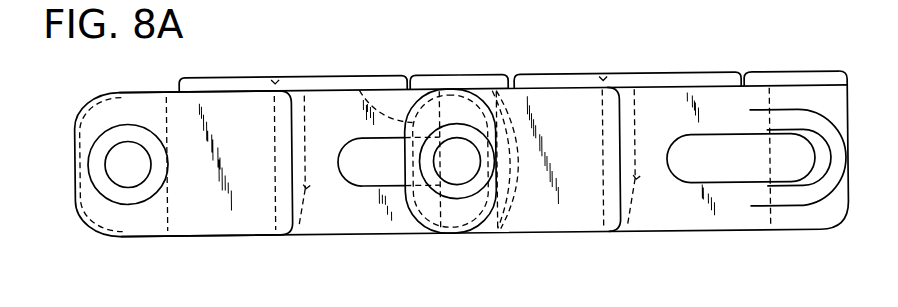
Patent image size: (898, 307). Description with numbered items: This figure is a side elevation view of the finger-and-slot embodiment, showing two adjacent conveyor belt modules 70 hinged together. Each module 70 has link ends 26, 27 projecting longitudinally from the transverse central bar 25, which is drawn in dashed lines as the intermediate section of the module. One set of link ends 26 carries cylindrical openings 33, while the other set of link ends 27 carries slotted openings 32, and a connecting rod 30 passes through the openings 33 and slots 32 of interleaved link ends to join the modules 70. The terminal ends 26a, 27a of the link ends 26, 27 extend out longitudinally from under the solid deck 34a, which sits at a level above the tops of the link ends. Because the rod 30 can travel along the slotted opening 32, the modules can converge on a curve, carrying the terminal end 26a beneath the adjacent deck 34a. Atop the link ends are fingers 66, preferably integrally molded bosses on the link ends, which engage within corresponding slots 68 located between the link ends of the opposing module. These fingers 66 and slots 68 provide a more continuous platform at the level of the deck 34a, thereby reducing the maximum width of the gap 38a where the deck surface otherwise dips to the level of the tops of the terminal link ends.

The transverse central bar 25 is at (307, 187).
The link end 26 is at (72, 200).
The terminal end of link end 26a is at (78, 128).
The link end 27 is at (418, 233).
The terminal end of link end 27a is at (837, 208).
The connecting rod 30 is at (457, 172).
The slotted opening 32 is at (368, 167).
The cylindrical opening 33 is at (128, 158).
The solid deck 34a is at (247, 76).
The gap 38a is at (476, 77).
The finger 66 is at (430, 78).
The slot 68 is at (269, 72).
The module 70 is at (92, 247).